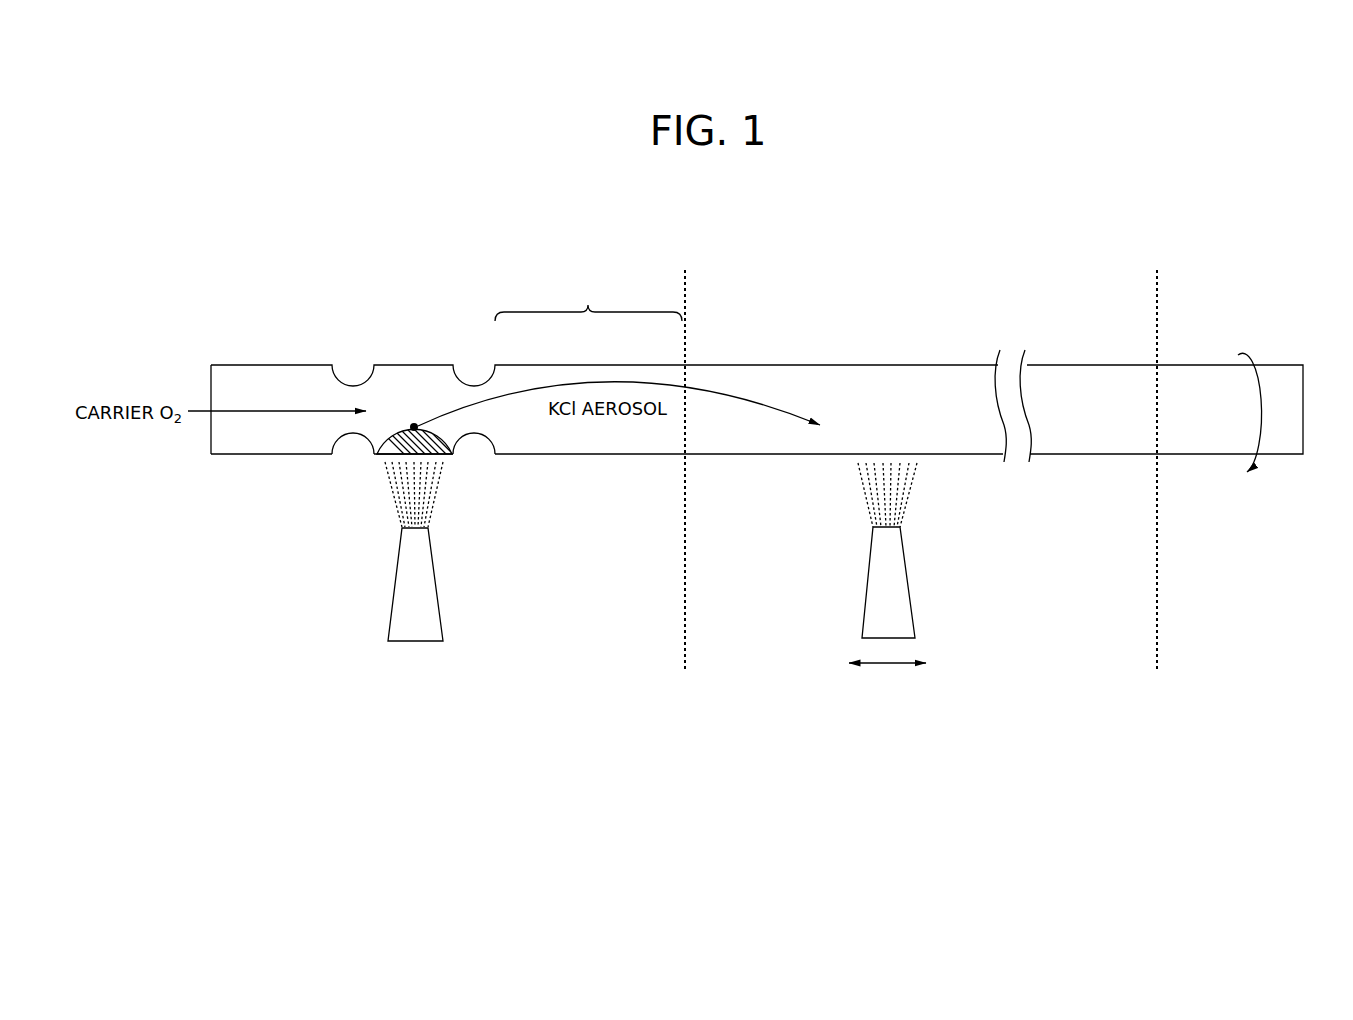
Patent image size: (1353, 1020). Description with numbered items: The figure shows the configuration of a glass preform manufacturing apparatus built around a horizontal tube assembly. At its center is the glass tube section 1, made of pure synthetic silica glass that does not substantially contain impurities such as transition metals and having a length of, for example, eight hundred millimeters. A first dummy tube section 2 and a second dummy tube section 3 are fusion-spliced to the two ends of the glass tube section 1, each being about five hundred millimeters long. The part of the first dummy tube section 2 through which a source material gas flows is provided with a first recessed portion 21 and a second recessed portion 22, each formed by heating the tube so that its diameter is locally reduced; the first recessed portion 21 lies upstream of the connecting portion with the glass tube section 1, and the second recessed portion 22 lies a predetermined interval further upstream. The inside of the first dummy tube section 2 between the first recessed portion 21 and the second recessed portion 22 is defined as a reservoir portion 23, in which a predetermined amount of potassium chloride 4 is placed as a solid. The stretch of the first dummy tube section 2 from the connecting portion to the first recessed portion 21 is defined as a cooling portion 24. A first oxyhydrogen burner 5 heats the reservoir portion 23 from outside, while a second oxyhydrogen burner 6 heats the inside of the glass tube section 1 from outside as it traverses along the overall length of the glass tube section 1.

The glass tube section 1 is at (1153, 267).
The first dummy tube section 2 is at (448, 382).
The second dummy tube section 3 is at (1302, 267).
The potassium chloride 4 is at (440, 446).
The first oxyhydrogen burner 5 is at (425, 600).
The second oxyhydrogen burner 6 is at (898, 598).
The first recessed portion 21 is at (479, 460).
The second recessed portion 22 is at (354, 462).
The reservoir portion 23 is at (411, 404).
The cooling portion 24 is at (588, 300).